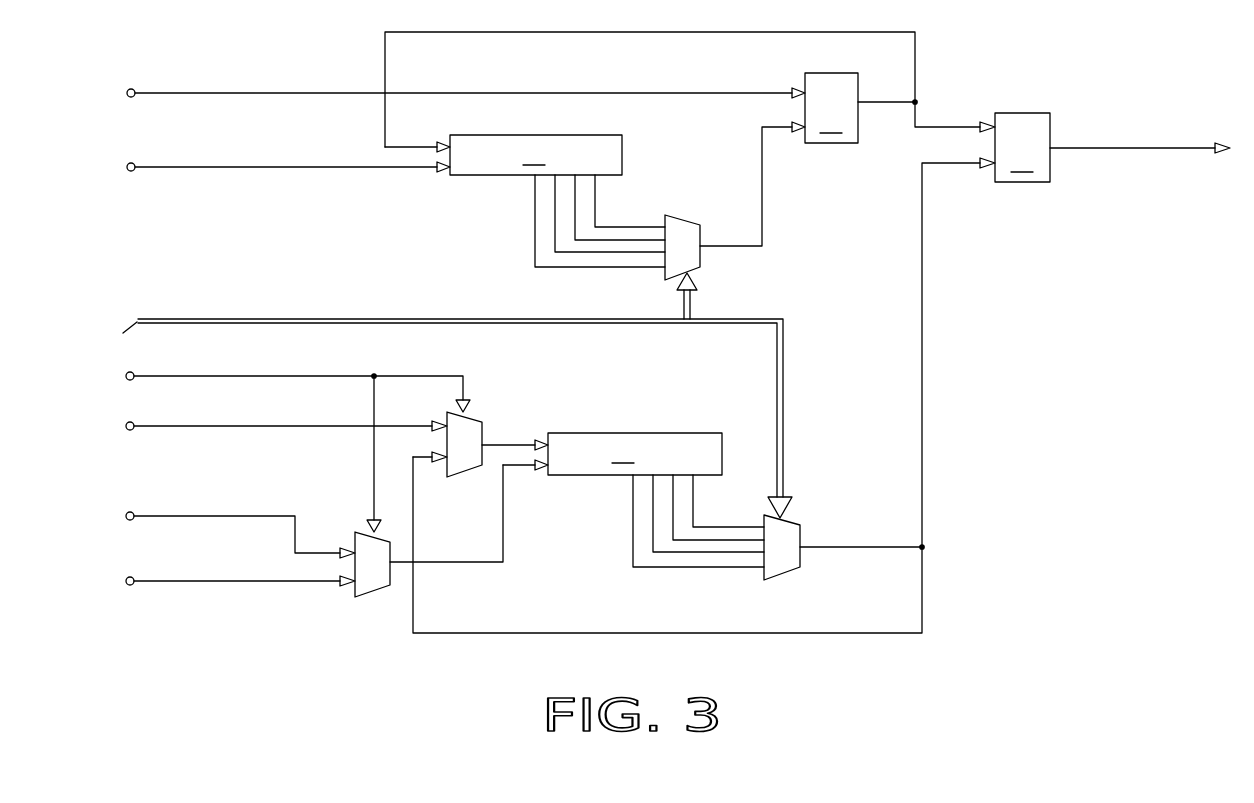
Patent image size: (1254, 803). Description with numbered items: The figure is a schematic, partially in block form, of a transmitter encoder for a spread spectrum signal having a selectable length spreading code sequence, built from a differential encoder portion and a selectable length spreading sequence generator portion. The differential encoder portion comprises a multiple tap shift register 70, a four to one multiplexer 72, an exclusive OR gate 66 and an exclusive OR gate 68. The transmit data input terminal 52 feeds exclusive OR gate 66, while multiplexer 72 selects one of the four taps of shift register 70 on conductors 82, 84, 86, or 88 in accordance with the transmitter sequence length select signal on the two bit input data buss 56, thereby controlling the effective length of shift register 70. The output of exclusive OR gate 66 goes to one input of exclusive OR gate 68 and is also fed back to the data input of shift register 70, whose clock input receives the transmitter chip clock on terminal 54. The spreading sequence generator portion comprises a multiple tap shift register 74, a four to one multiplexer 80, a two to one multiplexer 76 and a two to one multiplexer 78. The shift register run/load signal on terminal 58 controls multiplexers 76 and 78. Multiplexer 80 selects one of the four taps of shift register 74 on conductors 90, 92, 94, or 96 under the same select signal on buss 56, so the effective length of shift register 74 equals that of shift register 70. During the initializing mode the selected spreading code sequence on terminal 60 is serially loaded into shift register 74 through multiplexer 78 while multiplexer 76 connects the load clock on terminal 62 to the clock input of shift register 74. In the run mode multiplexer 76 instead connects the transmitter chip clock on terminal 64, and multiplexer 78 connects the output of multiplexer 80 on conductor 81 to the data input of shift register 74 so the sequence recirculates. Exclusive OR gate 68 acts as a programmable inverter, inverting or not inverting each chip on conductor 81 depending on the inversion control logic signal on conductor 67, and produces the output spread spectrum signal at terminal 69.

The TX data input 52 is at (128, 92).
The terminal 54 is at (128, 166).
The input data buss 56 is at (136, 320).
The terminal 58 is at (128, 375).
The terminal 60 is at (128, 426).
The terminal 62 is at (126, 514).
The terminal 64 is at (126, 580).
The exclusive OR gate 66 is at (831, 108).
The conductor 67 is at (918, 103).
The exclusive OR gate 68 is at (1022, 147).
The terminal 69 is at (1228, 152).
The multiple tap shift register 70 is at (536, 155).
The 4 to 1 multiplexer 72 is at (680, 218).
The multiple tap shift register 74 is at (612, 454).
The 2 to 1 multiplexer 76 is at (372, 597).
The 2 to 1 multiplexer 78 is at (483, 425).
The 4 to 1 multiplexer 80 is at (790, 520).
The conductor 81 is at (860, 546).
The conductor 82 is at (535, 195).
The conductor 84 is at (555, 216).
The conductor 86 is at (595, 240).
The conductor 88 is at (630, 220).
The conductor 90 is at (633, 495).
The conductor 92 is at (653, 513).
The conductor 94 is at (693, 540).
The conductor 96 is at (727, 525).